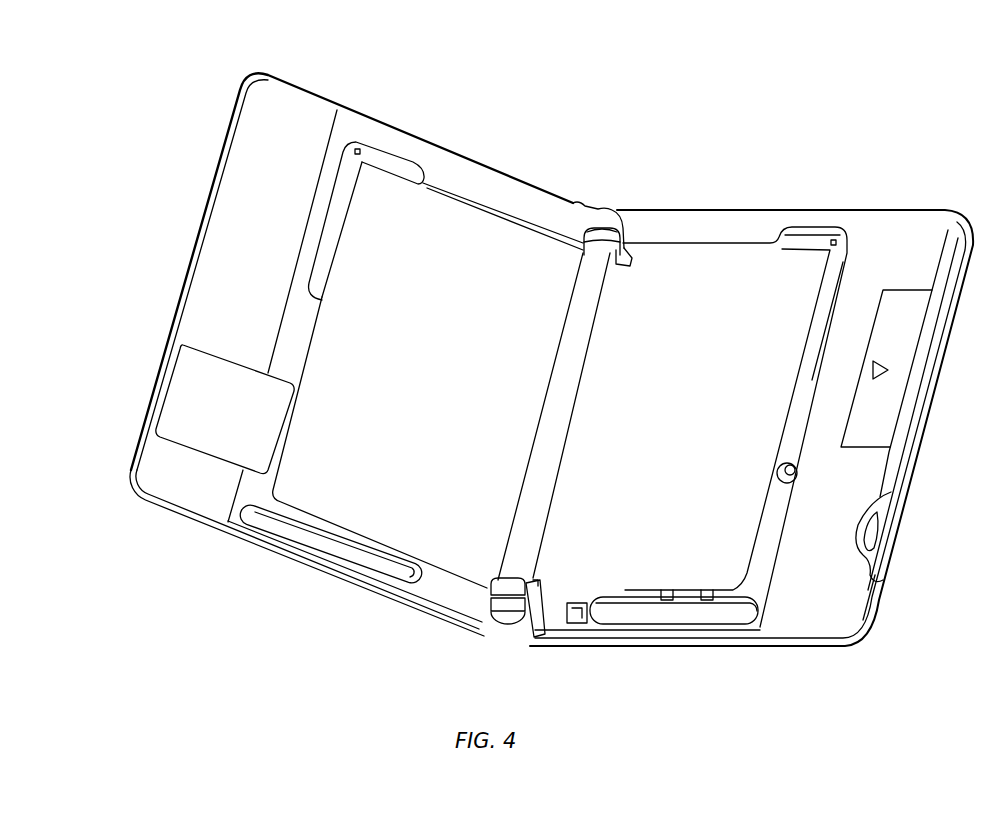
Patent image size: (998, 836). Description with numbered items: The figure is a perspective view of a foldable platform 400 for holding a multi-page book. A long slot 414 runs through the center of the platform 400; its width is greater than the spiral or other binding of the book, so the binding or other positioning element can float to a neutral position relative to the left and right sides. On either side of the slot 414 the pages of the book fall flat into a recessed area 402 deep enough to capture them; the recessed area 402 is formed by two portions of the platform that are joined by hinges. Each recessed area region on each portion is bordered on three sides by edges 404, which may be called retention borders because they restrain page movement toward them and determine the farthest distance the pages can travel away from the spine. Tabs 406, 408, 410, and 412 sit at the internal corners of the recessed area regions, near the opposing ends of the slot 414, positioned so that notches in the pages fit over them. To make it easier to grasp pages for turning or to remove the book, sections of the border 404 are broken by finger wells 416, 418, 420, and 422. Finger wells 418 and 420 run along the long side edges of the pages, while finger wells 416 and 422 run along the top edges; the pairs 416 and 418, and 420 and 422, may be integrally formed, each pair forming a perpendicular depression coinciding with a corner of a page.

The platform 400 is at (152, 181).
The recessed area 402 is at (488, 384).
The edges 404 is at (780, 413).
The tab 406 is at (629, 263).
The tab 408 is at (546, 589).
The tab 410 is at (568, 258).
The tab 412 is at (497, 587).
The slot 414 is at (556, 440).
The finger well 416 is at (817, 230).
The finger well 418 is at (817, 310).
The finger well 420 is at (398, 165).
The finger well 422 is at (335, 216).